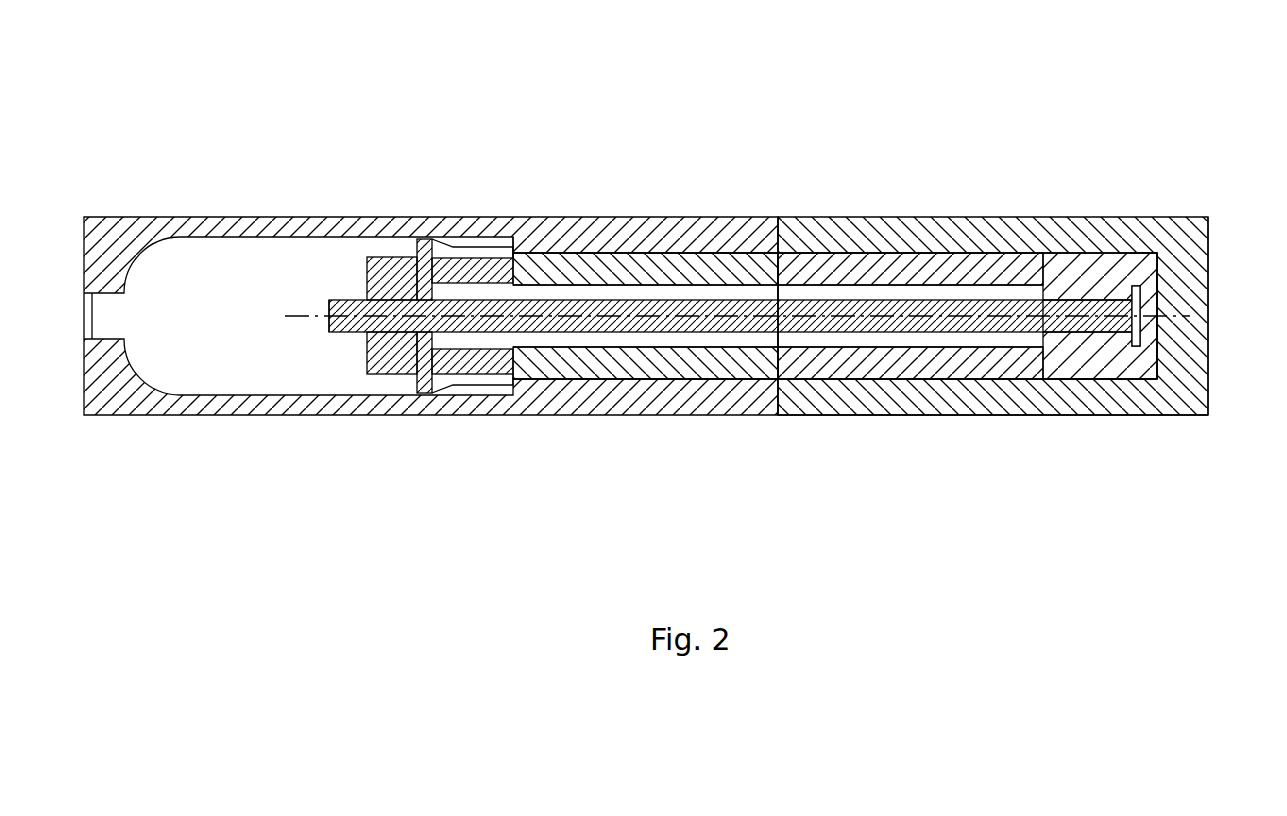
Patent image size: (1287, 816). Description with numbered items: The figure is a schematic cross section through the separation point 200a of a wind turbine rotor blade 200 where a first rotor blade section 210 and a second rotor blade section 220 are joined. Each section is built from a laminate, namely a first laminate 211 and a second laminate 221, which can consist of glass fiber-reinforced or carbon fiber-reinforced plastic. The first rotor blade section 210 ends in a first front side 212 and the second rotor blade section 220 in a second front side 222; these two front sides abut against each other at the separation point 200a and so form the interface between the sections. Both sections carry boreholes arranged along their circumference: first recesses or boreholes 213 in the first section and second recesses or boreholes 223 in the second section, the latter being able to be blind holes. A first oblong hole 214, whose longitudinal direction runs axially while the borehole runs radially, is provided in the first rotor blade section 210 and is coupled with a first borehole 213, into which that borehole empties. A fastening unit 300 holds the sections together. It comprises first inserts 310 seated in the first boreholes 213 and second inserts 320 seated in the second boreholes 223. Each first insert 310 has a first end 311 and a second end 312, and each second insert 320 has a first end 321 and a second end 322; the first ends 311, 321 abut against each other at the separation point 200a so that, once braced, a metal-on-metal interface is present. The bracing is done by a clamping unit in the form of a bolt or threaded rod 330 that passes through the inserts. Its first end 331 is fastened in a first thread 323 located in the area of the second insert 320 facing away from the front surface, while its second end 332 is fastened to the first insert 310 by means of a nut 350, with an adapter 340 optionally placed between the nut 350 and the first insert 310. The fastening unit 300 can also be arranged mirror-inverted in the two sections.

The ejector / device assembly 200 is at (679, 294).
The separation point 200a is at (786, 415).
The first rotor blade section 210 is at (590, 225).
The first laminate 211 is at (655, 220).
The first front side 212 is at (778, 237).
The first recesses or boreholes 213 is at (677, 336).
The first oblong hole 214 is at (710, 320).
The second rotor blade section 220 is at (1039, 232).
The second laminate 221 is at (842, 225).
The second front side 222 is at (781, 398).
The second recesses or boreholes 223 is at (1076, 348).
The fastening unit 300 is at (763, 318).
The first inserts 310 is at (547, 373).
The first end of first insert 311 is at (712, 253).
The second end of first insert 312 is at (513, 253).
The second inserts 320 is at (998, 354).
The first end of second insert 321 is at (795, 235).
The second end of second insert 322 is at (1133, 275).
The first thread 323 is at (1112, 347).
The threaded rod 330 is at (989, 300).
The first end of bolt 331 is at (1144, 313).
The second end of bolt 332 is at (347, 300).
The adapter 340 is at (488, 258).
The nut 350 is at (393, 257).